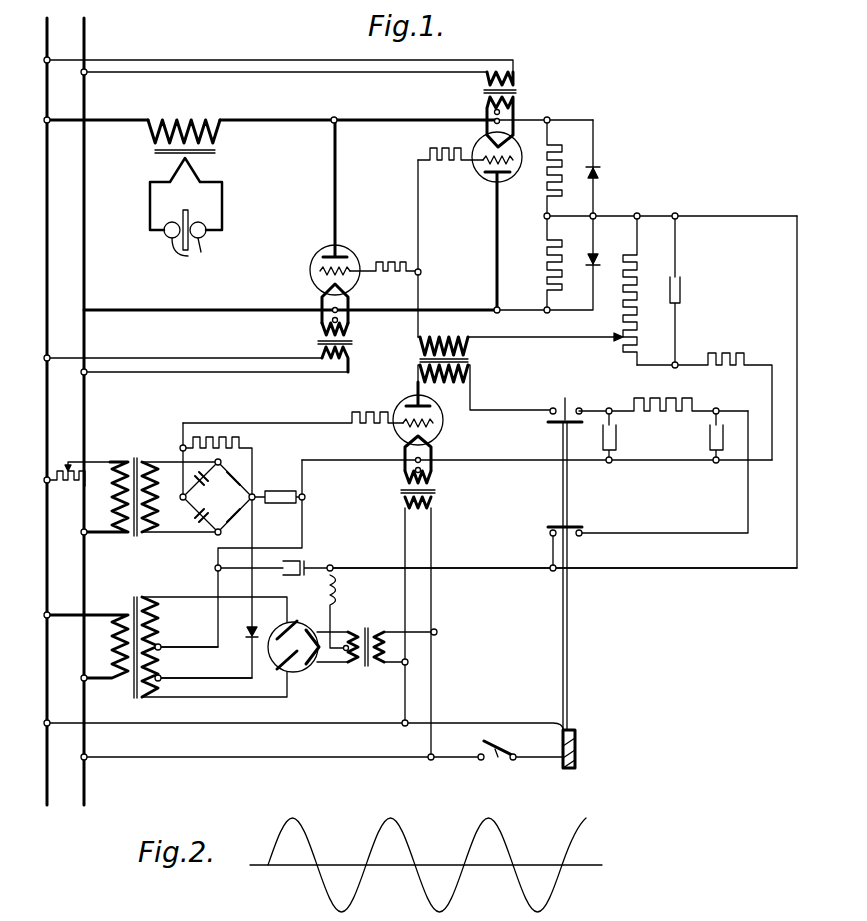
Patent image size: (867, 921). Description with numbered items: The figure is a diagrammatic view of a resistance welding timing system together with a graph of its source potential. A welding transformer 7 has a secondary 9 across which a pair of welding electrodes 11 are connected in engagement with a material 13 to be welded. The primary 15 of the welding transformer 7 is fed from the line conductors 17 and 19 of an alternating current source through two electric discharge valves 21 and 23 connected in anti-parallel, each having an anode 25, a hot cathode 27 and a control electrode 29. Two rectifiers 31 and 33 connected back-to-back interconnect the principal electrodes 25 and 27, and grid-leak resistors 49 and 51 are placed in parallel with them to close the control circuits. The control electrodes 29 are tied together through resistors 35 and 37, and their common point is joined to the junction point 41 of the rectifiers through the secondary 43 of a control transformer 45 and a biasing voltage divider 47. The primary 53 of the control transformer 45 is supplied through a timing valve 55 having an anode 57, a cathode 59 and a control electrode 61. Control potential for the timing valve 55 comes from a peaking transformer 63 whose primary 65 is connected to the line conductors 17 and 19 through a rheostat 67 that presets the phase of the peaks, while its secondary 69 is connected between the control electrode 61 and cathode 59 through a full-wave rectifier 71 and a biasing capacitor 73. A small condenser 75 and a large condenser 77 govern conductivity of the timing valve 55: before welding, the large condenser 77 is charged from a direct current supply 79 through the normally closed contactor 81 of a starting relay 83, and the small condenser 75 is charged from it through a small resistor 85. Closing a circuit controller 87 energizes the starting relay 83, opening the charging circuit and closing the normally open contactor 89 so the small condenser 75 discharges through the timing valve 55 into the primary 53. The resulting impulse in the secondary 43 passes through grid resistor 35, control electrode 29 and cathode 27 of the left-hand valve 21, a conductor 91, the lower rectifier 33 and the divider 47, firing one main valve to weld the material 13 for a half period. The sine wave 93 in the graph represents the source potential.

In FIG. 1, the welding transformer 7 is at (197, 205).
In FIG. 1, the secondary 9 is at (192, 168).
In FIG. 1, the welding electrodes 11 is at (190, 252).
In FIG. 1, the material 13 is at (182, 216).
In FIG. 1, the primary 15 is at (222, 133).
In FIG. 1, the line conductor 17 is at (84, 185).
In FIG. 1, the line conductor 19 is at (47, 222).
In FIG. 1, the electric discharge valve 21 is at (352, 256).
In FIG. 1, the electric discharge valve 23 is at (473, 170).
In FIG. 1, the anode 25 is at (323, 257).
In FIG. 1, the hot cathode 27 is at (320, 291).
In FIG. 1, the control electrode 29 is at (320, 271).
In FIG. 1, the rectifier 31 is at (600, 169).
In FIG. 1, the rectifier 33 is at (596, 262).
In FIG. 1, the resistor 35 is at (386, 262).
In FIG. 1, the resistor 37 is at (436, 164).
In FIG. 1, the junction point 41 is at (594, 214).
In FIG. 1, the secondary 43 is at (469, 350).
In FIG. 1, the control transformer 45 is at (401, 362).
In FIG. 1, the biasing voltage divider 47 is at (620, 305).
In FIG. 1, the resistor 49 is at (558, 192).
In FIG. 1, the resistor 51 is at (558, 282).
In FIG. 1, the primary 53 is at (470, 372).
In FIG. 1, the timing valve 55 is at (443, 428).
In FIG. 1, the anode 57 is at (406, 406).
In FIG. 1, the cathode 59 is at (400, 437).
In FIG. 1, the control electrode 61 is at (430, 421).
In FIG. 1, the peaking transformer 63 is at (151, 494).
In FIG. 1, the primary 65 is at (124, 538).
In FIG. 1, the rheostat 67 is at (57, 490).
In FIG. 1, the secondary 69 is at (146, 460).
In FIG. 1, the full-wave rectifier 71 is at (227, 506).
In FIG. 1, the biasing capacitor 73 is at (276, 482).
In FIG. 1, the small condenser 75 is at (617, 438).
In FIG. 1, the large condenser 77 is at (709, 438).
In FIG. 1, the direct current supply 79 is at (300, 560).
In FIG. 1, the normally closed contactor 81 is at (582, 526).
In FIG. 1, the starting relay 83 is at (618, 748).
In FIG. 1, the resistor 85 is at (632, 399).
In FIG. 1, the circuit controller 87 is at (520, 764).
In FIG. 1, the normally open contactor 89 is at (564, 555).
In FIG. 1, the conductor 91 is at (470, 309).
In FIG. 2, the sine wave 93 is at (300, 822).